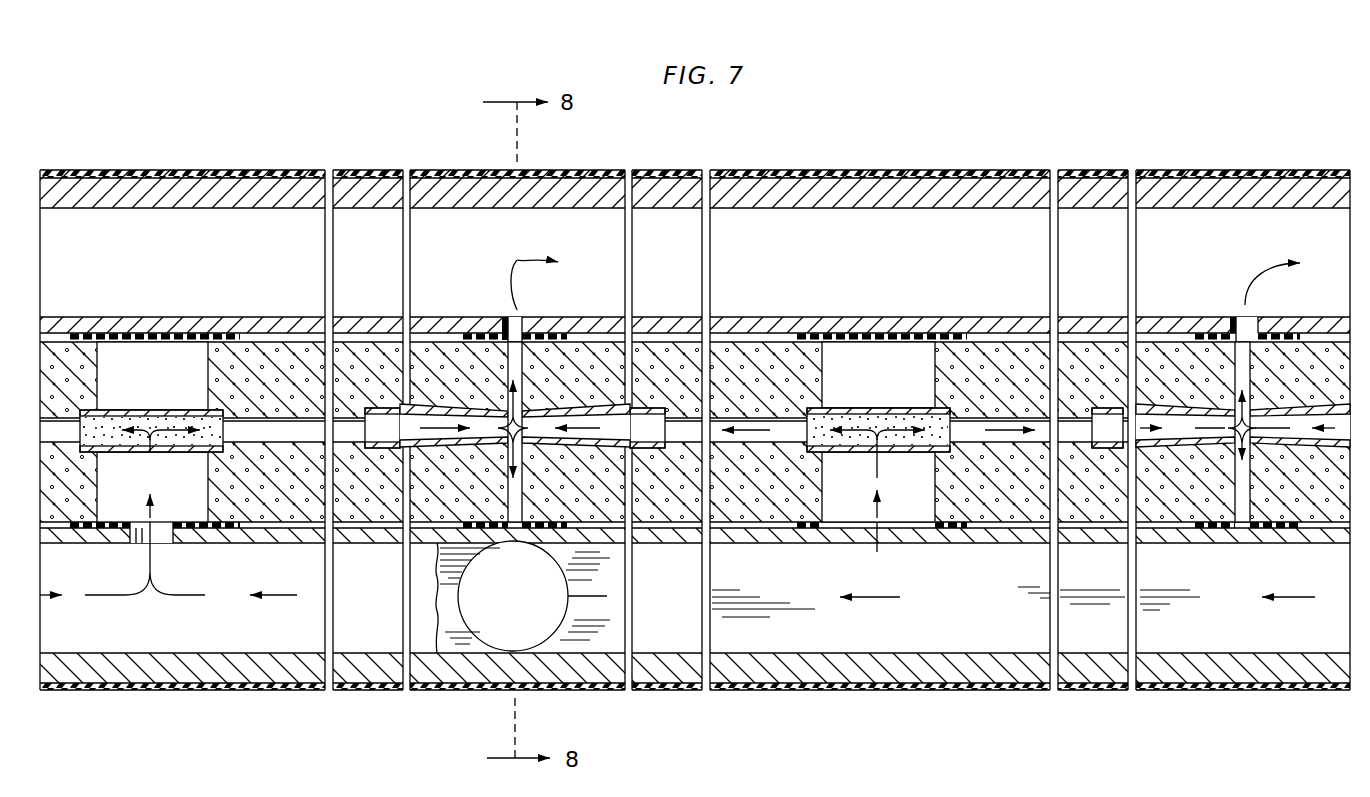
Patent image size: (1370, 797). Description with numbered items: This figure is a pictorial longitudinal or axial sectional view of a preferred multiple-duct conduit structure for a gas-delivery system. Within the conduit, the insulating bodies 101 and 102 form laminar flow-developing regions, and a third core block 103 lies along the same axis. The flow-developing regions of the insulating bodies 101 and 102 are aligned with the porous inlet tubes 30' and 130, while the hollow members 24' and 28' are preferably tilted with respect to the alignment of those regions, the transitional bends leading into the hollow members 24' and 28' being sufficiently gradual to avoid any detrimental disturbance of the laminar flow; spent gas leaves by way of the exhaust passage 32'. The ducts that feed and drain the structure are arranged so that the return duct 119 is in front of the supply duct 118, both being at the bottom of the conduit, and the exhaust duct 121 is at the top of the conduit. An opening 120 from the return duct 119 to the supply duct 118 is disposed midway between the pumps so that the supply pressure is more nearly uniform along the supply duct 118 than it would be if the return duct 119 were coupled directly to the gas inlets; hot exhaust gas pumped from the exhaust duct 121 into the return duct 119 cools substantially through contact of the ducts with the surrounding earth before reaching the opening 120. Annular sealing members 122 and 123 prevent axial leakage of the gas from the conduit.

The insulating body 101 is at (267, 367).
The insulating body 102 is at (742, 374).
The third core block 103 is at (998, 374).
The supply duct 118 is at (137, 637).
The return duct 119 is at (768, 630).
The opening 120 is at (487, 636).
The exhaust duct 121 is at (1007, 230).
The annular sealing member 122 is at (912, 335).
The annular sealing member 123 is at (472, 337).
The porous inlet tube 130 is at (860, 406).
The porous inlet tube 30' is at (151, 432).
The hollow member 24' is at (436, 364).
The hollow member 28' is at (593, 364).
The exhaust passage 32' is at (531, 391).